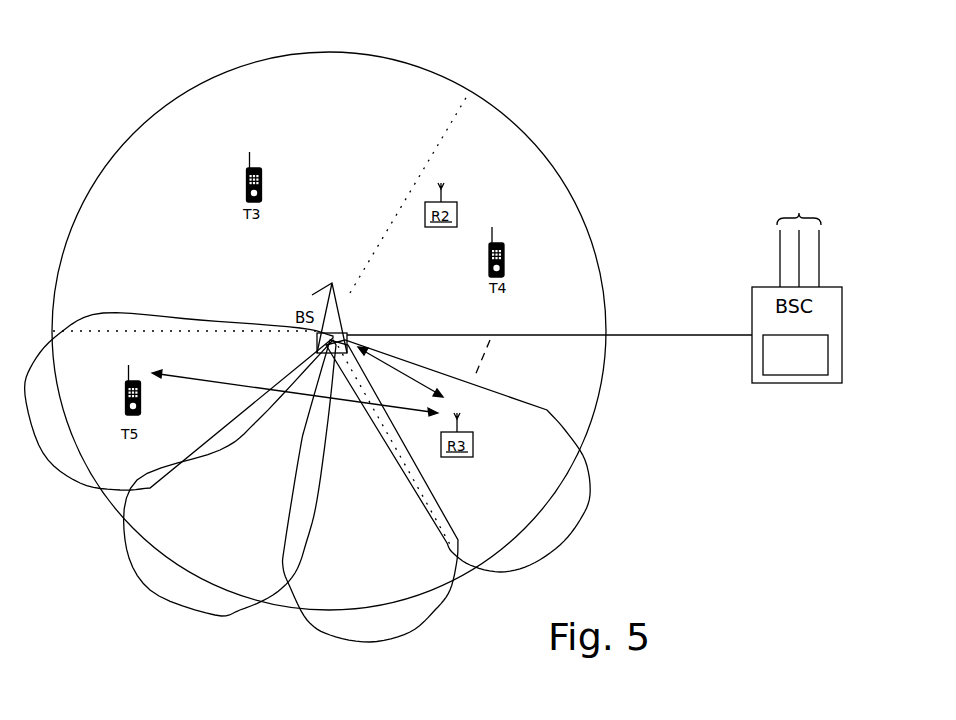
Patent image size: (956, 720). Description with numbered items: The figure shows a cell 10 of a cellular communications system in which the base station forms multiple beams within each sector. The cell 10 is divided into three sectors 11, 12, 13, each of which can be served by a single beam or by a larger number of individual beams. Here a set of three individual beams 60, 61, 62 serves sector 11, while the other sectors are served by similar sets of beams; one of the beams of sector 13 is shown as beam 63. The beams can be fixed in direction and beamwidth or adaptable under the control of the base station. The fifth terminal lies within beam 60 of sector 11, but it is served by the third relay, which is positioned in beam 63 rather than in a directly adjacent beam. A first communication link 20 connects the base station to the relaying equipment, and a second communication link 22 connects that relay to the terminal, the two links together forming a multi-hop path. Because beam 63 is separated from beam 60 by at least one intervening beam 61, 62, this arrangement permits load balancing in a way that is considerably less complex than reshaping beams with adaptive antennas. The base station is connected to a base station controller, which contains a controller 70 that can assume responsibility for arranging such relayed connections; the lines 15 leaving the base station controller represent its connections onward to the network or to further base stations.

The cell 10 is at (337, 334).
The sector 11 is at (337, 353).
The sector 12 is at (337, 327).
The sector 13 is at (592, 238).
The connections to network 15 is at (799, 237).
The first communication link 20 is at (400, 372).
The second communication link 22 is at (295, 394).
The beam 60 is at (65, 478).
The beam 61 is at (137, 578).
The beam 62 is at (346, 643).
The beam 63 is at (522, 572).
The controller 70 is at (812, 378).